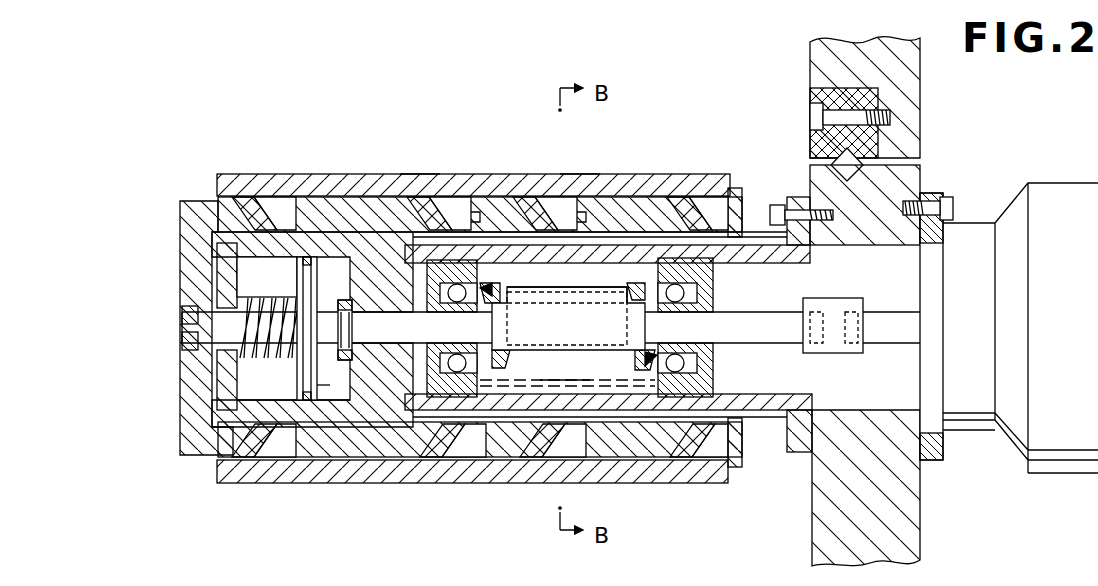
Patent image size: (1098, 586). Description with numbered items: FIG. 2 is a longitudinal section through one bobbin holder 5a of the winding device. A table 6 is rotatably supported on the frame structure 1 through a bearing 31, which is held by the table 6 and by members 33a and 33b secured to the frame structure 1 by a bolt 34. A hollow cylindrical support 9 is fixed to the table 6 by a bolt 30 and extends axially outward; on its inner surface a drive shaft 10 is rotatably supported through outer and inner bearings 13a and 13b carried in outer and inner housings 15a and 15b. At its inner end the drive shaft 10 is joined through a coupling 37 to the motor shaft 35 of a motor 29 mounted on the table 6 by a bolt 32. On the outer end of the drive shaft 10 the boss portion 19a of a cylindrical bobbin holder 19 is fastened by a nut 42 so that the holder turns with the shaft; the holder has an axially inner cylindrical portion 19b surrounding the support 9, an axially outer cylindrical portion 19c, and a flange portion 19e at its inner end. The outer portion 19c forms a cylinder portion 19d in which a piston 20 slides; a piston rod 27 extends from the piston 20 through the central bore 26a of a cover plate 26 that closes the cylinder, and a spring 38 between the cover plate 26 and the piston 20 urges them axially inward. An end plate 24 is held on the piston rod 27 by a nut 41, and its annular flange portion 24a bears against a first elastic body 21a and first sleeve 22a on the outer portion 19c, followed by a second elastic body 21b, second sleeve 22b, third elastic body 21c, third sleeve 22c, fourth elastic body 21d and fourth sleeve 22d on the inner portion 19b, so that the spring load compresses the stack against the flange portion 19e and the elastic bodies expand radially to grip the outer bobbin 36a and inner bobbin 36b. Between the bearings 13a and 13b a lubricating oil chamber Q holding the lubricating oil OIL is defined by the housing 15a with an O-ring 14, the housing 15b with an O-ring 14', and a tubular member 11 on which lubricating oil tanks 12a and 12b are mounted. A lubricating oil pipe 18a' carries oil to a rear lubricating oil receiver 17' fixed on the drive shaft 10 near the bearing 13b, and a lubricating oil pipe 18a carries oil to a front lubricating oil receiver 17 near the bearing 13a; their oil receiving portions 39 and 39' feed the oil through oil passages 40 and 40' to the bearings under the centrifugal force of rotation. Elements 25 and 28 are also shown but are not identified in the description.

The frame structure 1 is at (816, 60).
The bobbin holder 5a is at (416, 154).
The table 6 is at (816, 466).
The hollow cylindrical support 9 is at (762, 400).
The drive shaft 10 is at (396, 318).
The tubular member 11 is at (586, 287).
The lubricating oil tank 12a is at (565, 289).
The lubricating oil tank 12b is at (624, 287).
The outer bearing 13a is at (448, 298).
The inner bearing 13b is at (715, 299).
The O-ring 14 is at (578, 262).
The O-ring 14' is at (607, 240).
The outer housing 15a is at (468, 398).
The inner housing 15b is at (708, 386).
The front lubricating oil receiver 17 is at (479, 310).
The rear lubricating oil receiver 17' is at (618, 363).
The lubricating oil pipe 18a is at (567, 318).
The lubricating oil pipe 18a' is at (567, 325).
The cylindrical bobbin holder 19 is at (357, 420).
The boss portion 19a is at (393, 384).
The axially inner cylindrical portion 19b is at (440, 458).
The axially outer cylindrical portion 19c is at (300, 421).
The cylinder portion 19d is at (278, 393).
The flange portion 19e is at (742, 440).
The piston 20 is at (300, 263).
The first elastic body 21a is at (248, 206).
The second elastic body 21b is at (413, 206).
The third elastic body 21c is at (522, 206).
The fourth elastic body 21d is at (672, 206).
The first sleeve 22a is at (322, 210).
The second sleeve 22b is at (470, 215).
The third sleeve 22c is at (626, 214).
The fourth sleeve 22d is at (736, 190).
The end plate 24 is at (190, 444).
The annular flange portion 24a is at (216, 470).
The end cap 25 is at (190, 308).
The cover plate 26 is at (216, 396).
The central bore 26a is at (216, 365).
The piston rod 27 is at (265, 352).
The retainer 28 is at (318, 354).
The motor 29 is at (1062, 184).
The bolt 30 is at (778, 206).
The bearing 31 is at (850, 175).
The bolt 32 is at (955, 207).
The member 33a is at (812, 100).
The member 33b is at (852, 148).
The bolt 34 is at (810, 120).
The motor shaft 35 is at (866, 312).
The outer bobbin 36a is at (378, 180).
The inner bobbin 36b is at (578, 182).
The coupling 37 is at (850, 354).
The spring 38 is at (256, 300).
The oil receiving portion 39 is at (520, 364).
The oil receiving portion 39' is at (618, 280).
The oil passage 40 is at (506, 278).
The oil passage 40' is at (650, 401).
The nut 41 is at (182, 344).
The nut 42 is at (342, 300).
The lubricating oil chamber Q is at (565, 372).
The oil OIL is at (610, 387).